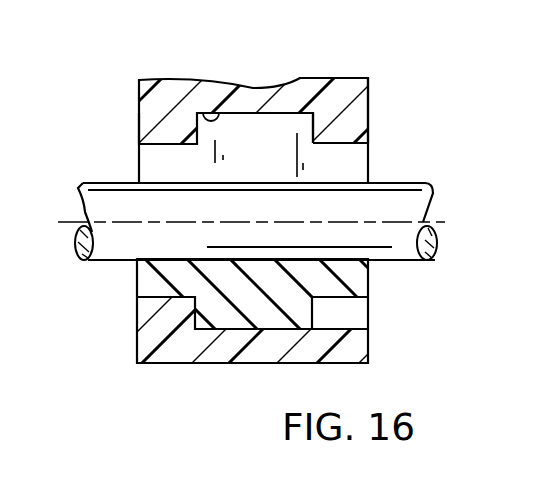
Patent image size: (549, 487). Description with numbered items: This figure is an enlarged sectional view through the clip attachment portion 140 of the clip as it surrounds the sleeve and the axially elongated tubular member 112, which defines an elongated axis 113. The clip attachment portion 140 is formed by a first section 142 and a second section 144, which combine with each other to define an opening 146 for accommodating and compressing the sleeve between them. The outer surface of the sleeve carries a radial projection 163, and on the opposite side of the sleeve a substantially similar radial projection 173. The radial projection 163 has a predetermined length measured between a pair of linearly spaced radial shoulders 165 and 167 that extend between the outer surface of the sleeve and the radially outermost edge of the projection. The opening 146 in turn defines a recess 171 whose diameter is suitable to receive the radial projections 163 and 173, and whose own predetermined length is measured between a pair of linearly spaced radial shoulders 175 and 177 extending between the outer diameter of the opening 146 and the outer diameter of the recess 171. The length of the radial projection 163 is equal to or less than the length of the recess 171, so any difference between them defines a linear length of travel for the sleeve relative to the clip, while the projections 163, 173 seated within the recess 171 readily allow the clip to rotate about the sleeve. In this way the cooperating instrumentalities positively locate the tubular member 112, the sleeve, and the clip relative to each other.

The tubular member 112 is at (97, 197).
The elongated axis 113 is at (76, 247).
The clip attachment portion 140 is at (104, 362).
The first section 142 is at (140, 92).
The second section 144 is at (150, 356).
The opening 146 is at (340, 147).
The radial projection 163 is at (287, 120).
The radial shoulder 165 is at (142, 128).
The radial shoulder 167 is at (350, 118).
The recess 171 is at (203, 112).
The radial projection 173 is at (220, 313).
The radial shoulder 175 is at (207, 145).
The radial shoulder 177 is at (310, 124).